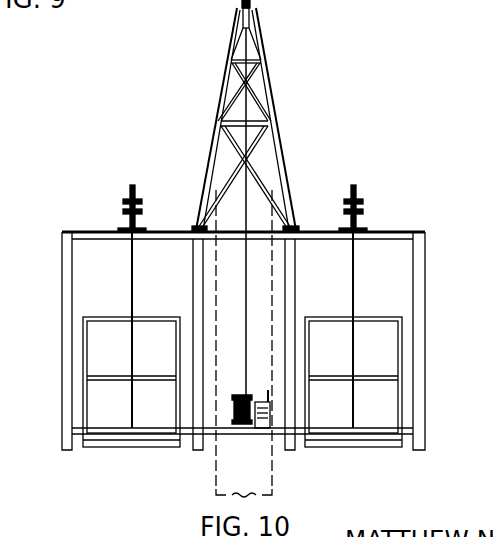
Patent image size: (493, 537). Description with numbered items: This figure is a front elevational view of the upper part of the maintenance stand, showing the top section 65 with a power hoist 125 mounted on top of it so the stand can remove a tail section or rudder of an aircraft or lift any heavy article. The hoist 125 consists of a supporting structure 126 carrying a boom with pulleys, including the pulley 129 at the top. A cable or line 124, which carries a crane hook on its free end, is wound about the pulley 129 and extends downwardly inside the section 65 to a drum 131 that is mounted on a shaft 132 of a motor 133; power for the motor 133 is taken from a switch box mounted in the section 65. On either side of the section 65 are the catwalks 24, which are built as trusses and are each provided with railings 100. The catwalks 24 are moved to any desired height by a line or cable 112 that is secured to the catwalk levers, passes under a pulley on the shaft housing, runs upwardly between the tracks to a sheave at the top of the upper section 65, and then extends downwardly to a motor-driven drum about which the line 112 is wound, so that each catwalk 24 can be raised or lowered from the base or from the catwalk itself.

The catwalk 24 is at (60, 387).
The top section 65 is at (440, 286).
The railing 100 is at (116, 317).
The line or cable 112 is at (133, 276).
The cable or line 124 is at (262, 304).
The power hoist 125 is at (259, 120).
The supporting structure 126 is at (219, 104).
The pulley 129 is at (251, 5).
The drum 131 is at (232, 412).
The shaft 132 is at (256, 426).
The motor 133 is at (266, 401).